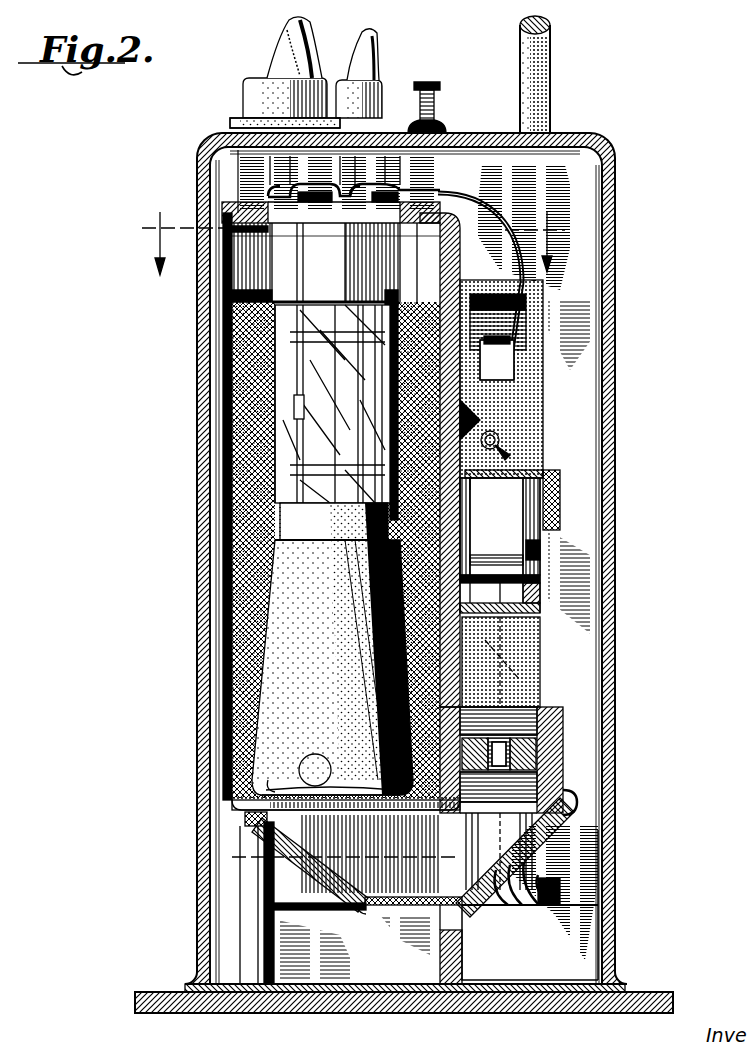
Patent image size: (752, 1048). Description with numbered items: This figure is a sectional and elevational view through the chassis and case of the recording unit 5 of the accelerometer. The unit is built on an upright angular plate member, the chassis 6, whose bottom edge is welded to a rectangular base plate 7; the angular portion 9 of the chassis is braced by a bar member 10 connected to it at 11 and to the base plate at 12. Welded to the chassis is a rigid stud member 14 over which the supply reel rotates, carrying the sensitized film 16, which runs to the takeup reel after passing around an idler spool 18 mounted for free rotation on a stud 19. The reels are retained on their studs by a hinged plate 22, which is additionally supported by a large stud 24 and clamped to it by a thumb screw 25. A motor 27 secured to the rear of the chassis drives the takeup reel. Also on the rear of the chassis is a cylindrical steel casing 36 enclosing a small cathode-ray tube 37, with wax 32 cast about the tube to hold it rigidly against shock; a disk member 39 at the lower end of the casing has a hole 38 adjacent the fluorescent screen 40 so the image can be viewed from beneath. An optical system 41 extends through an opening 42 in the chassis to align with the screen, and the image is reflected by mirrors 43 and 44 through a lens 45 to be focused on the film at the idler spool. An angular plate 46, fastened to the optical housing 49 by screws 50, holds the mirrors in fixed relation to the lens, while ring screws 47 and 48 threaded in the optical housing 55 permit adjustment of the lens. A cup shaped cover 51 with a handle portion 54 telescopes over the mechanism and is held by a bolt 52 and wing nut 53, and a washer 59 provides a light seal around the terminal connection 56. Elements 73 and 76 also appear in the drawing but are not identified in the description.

The recording unit 5 is at (632, 393).
The chassis 6 is at (438, 253).
The base plate 7 is at (662, 992).
The angular portion of the chassis 9 is at (222, 205).
The bar member 10 is at (246, 875).
The connection of bar member to angular portion 11 is at (230, 227).
The connection of bar member to base plate 12 is at (280, 984).
The rigid stud member 14 is at (540, 389).
The sensitized film 16 is at (500, 545).
The idler spool 18 is at (540, 587).
The stud 19 is at (540, 549).
The plate 22 is at (540, 437).
The large stud 24 is at (470, 481).
The thumb screw 25 is at (560, 469).
The motor 27 is at (310, 909).
The wax 32 is at (236, 449).
The cylindrical steel casing 36 is at (224, 545).
The cathode-ray tube 37 is at (332, 649).
The hole 38 is at (380, 812).
The disk member 39 is at (270, 780).
The fluorescent screen 40 is at (302, 794).
The optical system 41 is at (498, 905).
The opening 42 is at (462, 932).
The mirror 43 is at (358, 877).
The mirror 44 is at (452, 896).
The lens 45 is at (522, 760).
The angular plate 46 is at (356, 910).
The ring screw 47 is at (540, 712).
The ring screw 48 is at (548, 737).
The optical housing 49 is at (556, 765).
The screws 50 is at (252, 826).
The cup shaped cover 51 is at (616, 241).
The bolt 52 is at (434, 84).
The wing nut 53 is at (442, 126).
The handle portion 54 is at (551, 61).
The optical housing 55 is at (540, 805).
The terminal connection 56 is at (243, 82).
The washer 59 is at (162, 992).
The bent tube 73 is at (372, 32).
The terminal 76 is at (378, 82).